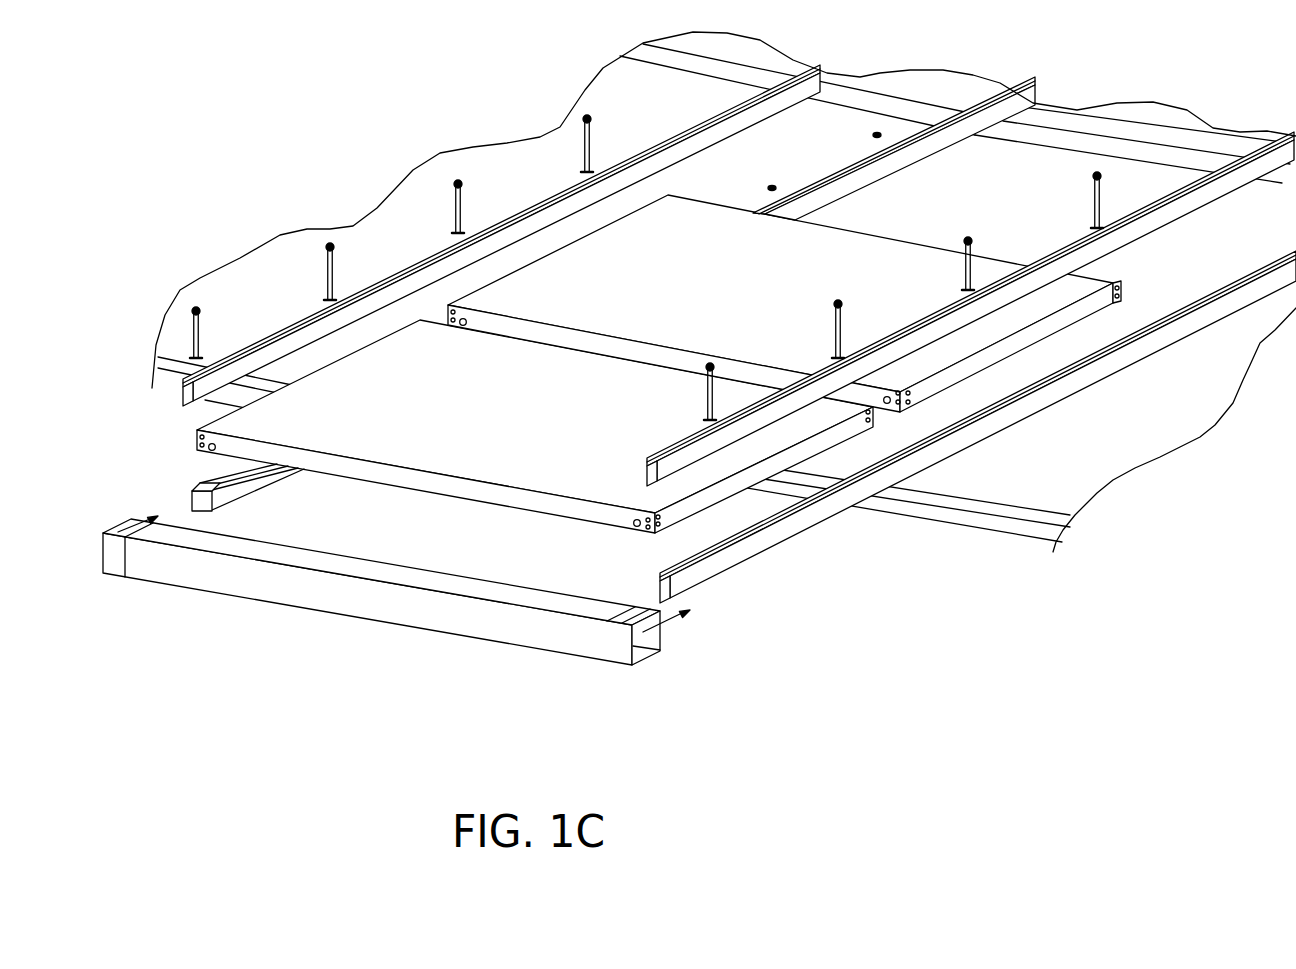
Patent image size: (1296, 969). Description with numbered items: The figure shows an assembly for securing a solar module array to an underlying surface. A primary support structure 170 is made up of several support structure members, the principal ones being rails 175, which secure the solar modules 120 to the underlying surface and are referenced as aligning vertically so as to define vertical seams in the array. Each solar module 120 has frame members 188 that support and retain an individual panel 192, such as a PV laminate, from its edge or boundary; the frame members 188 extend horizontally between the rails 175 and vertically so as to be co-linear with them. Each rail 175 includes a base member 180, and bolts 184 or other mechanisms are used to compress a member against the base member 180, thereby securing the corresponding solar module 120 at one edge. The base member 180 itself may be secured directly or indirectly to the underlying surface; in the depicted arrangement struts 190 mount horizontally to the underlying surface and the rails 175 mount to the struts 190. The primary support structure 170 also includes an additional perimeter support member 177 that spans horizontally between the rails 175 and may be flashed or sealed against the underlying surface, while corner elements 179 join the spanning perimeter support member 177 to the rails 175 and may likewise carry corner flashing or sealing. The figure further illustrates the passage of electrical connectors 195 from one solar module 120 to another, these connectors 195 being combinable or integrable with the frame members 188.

The solar module 120 is at (626, 378).
The primary support structure 170 is at (723, 621).
The rail 175 is at (739, 334).
The perimeter support member 177 is at (362, 617).
The corner element 179 is at (113, 557).
The base member 180 is at (1073, 387).
The bolt 184 is at (846, 350).
The frame member 188 is at (703, 205).
The strut 190 is at (993, 522).
The panel 192 is at (552, 290).
The electrical connector 195 is at (200, 450).